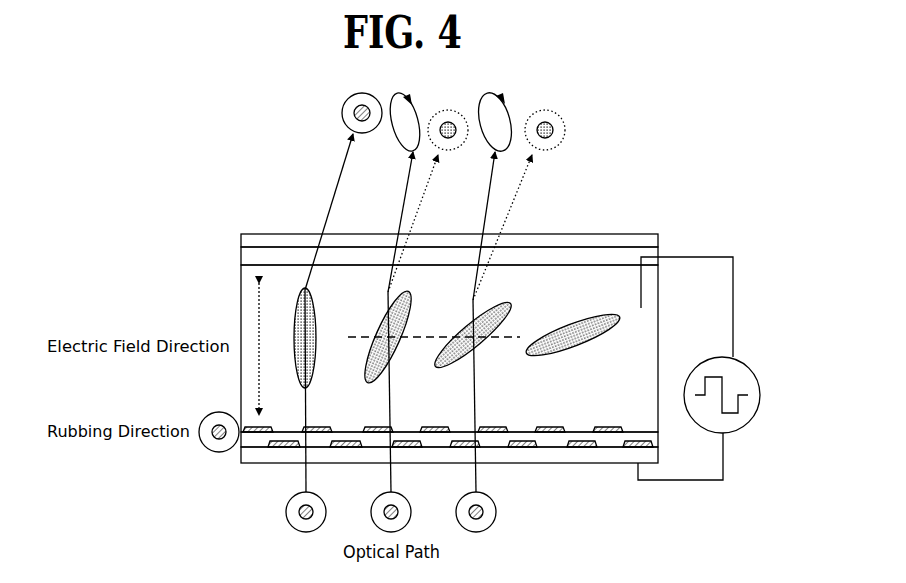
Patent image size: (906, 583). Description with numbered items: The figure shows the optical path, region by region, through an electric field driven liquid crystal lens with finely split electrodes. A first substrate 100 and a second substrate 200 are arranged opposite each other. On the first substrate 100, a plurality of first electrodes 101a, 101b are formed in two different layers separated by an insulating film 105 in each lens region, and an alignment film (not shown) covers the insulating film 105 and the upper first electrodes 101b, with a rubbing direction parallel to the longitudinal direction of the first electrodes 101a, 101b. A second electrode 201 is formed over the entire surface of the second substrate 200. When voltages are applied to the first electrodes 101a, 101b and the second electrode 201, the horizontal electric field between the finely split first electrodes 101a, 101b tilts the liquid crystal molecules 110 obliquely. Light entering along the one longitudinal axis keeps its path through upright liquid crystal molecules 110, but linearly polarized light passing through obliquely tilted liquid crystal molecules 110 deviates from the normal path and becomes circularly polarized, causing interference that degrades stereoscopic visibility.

The first substrate 100 is at (573, 461).
The insulating film 105 is at (612, 447).
The first electrode 101a is at (523, 447).
The first electrode 101b is at (256, 434).
The liquid crystal molecule 110 is at (592, 320).
The second substrate 200 is at (241, 242).
The second electrode 201 is at (241, 260).